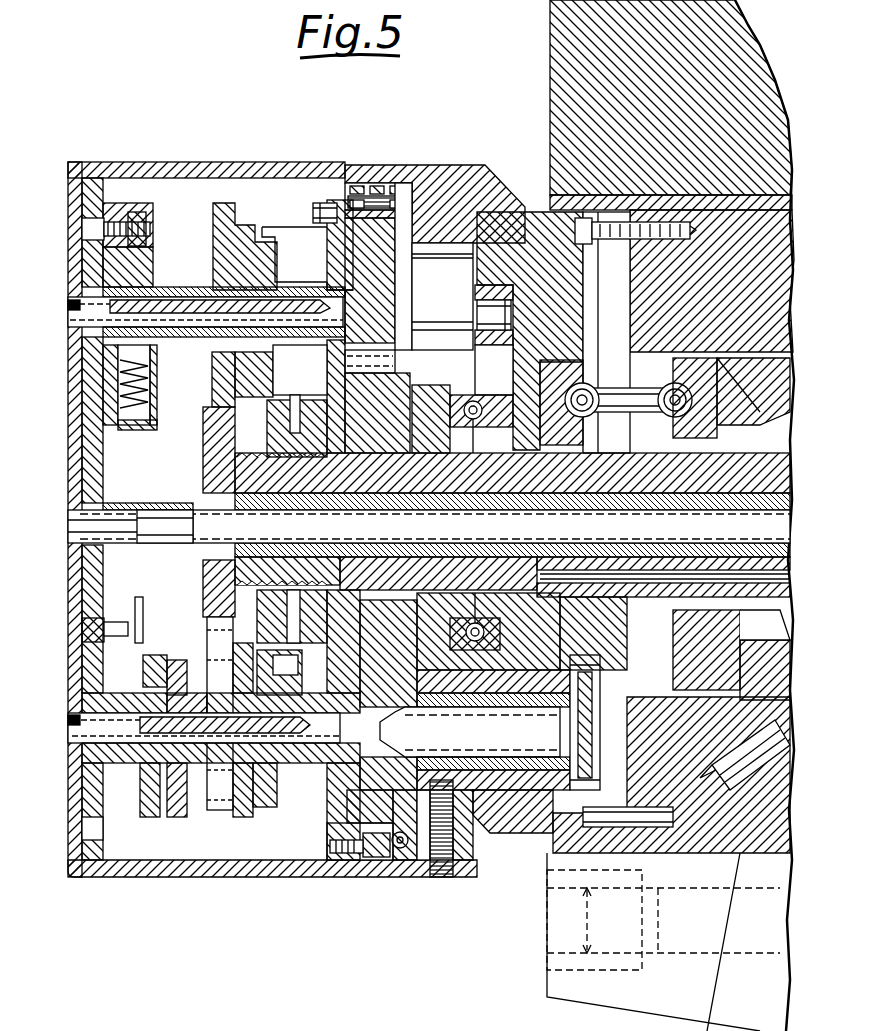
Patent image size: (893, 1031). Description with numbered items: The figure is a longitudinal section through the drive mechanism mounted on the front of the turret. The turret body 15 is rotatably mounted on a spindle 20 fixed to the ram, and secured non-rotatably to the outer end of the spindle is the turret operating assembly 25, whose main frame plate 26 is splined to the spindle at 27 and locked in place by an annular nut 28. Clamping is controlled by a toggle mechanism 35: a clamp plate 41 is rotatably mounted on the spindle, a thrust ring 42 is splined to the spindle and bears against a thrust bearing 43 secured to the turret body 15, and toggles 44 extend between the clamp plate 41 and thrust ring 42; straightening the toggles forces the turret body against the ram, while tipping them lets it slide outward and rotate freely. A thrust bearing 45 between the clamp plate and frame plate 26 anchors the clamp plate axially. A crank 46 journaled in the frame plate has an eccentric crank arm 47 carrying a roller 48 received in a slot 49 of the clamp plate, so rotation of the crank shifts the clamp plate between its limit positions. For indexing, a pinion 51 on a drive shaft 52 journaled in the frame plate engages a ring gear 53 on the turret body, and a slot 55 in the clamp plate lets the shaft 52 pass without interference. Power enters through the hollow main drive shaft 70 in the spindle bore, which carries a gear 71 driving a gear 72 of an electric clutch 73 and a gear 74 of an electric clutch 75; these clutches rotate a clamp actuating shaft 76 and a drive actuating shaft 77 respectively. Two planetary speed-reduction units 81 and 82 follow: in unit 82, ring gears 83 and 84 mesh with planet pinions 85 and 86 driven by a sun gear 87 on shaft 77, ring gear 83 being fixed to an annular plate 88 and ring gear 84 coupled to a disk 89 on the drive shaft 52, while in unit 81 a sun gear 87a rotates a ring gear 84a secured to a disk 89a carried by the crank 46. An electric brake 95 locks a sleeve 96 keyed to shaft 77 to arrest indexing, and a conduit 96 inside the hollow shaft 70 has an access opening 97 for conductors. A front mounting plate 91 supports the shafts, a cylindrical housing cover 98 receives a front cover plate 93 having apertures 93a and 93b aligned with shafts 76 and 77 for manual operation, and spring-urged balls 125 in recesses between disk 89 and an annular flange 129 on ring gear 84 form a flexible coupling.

The turret body 15 is at (610, 178).
The spindle 20 is at (502, 486).
The turret operating assembly 25 is at (400, 140).
The main frame plate 26 is at (462, 166).
The spline 27 is at (425, 494).
The annular nut 28 is at (270, 438).
The toggle mechanism 35 is at (612, 333).
The clamp plate 41 is at (540, 212).
The thrust ring 42 is at (690, 358).
The thrust bearing 43 is at (748, 358).
The toggles 44 is at (610, 395).
The thrust bearing 45 is at (490, 396).
The crank 46 is at (424, 297).
The eccentric crank arm 47 is at (481, 322).
The roller 48 is at (485, 285).
The slot 49 is at (512, 258).
The pinion 51 is at (600, 684).
The drive shaft 52 is at (482, 736).
The ring gear 53 is at (565, 838).
The slot 55 is at (600, 668).
The main drive shaft 70 is at (200, 504).
The gear 71 is at (210, 587).
The gear 72 is at (213, 247).
The electric clutch 73 is at (281, 226).
The gear 74 is at (212, 645).
The electric clutch 75 is at (265, 822).
The clamp actuating shaft 76 is at (326, 290).
The drive actuating shaft 77 is at (330, 770).
The planetary speed-reduction unit 81 is at (322, 200).
The planetary speed-reduction unit 82 is at (328, 838).
The ring gear 83 is at (340, 856).
The ring gear 84 is at (380, 858).
The ring gear 84a is at (375, 185).
The planet pinion 85 is at (345, 802).
The planet pinion 86 is at (328, 668).
The sun gear 87 is at (330, 693).
The sun gear 87a is at (395, 330).
The annular plate 88 is at (328, 247).
The disk 89 is at (400, 745).
The disk 89a is at (405, 210).
The front mounting plate 91 is at (100, 472).
The front cover plate 93 is at (70, 232).
The aperture 93a is at (70, 325).
The aperture 93b is at (70, 718).
The electric brake 95 is at (119, 640).
The sleeve 96 is at (120, 540).
The access opening 97 is at (150, 513).
The cylindrical housing cover 98 is at (195, 162).
The spring-urged balls 125 is at (425, 878).
The annular flange 129 is at (400, 850).